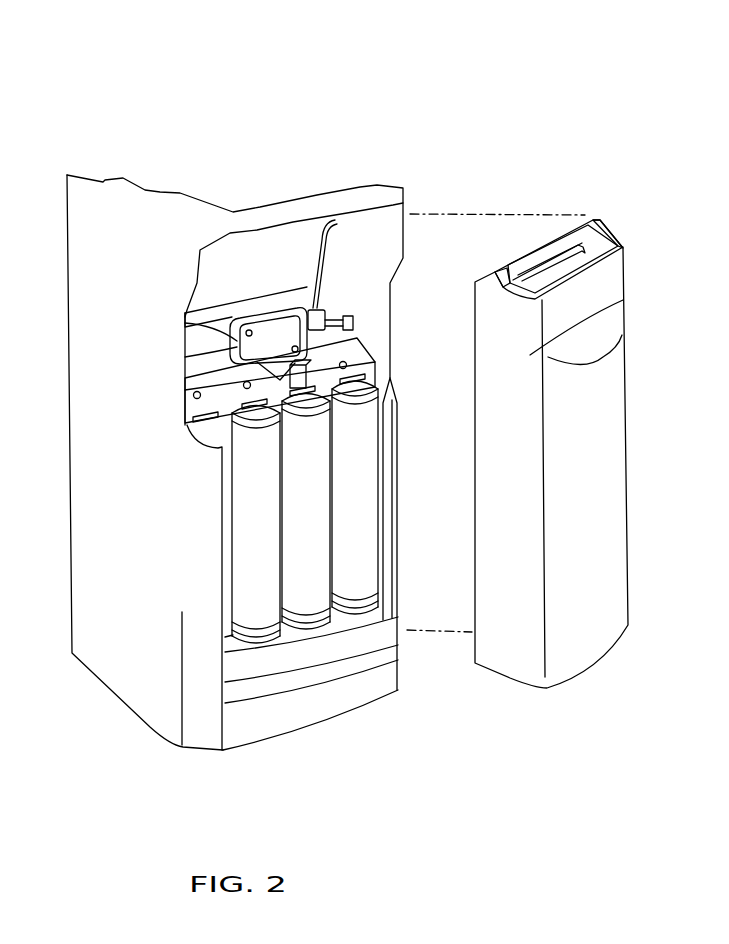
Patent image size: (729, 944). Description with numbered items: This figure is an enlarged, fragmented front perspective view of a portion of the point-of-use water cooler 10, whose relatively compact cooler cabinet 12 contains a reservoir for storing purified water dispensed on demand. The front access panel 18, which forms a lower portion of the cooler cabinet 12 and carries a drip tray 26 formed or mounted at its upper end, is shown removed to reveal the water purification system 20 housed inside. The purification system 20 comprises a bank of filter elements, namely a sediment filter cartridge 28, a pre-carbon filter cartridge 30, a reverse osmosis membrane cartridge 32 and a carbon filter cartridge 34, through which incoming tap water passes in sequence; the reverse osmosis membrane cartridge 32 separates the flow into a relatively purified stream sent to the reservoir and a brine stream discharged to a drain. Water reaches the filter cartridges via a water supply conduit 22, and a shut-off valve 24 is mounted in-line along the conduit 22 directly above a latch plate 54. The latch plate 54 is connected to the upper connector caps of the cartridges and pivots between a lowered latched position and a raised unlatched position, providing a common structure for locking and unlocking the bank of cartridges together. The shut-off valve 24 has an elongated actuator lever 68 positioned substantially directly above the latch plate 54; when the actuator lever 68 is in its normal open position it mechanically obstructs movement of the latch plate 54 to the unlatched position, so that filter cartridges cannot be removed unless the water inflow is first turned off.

The point-of-use water cooler 10 is at (430, 106).
The cooler cabinet 12 is at (120, 642).
The front access panel 18 is at (600, 498).
The water purification system 20 is at (323, 496).
The water supply conduit 22 is at (207, 343).
The shut-off valve 24 is at (272, 333).
The drip tray 26 is at (585, 266).
The sediment filter cartridge 28 is at (357, 587).
The pre-carbon filter cartridge 30 is at (307, 598).
The reverse osmosis membrane cartridge 32 is at (258, 612).
The carbon filter cartridge 34 is at (227, 590).
The latch plate 54 is at (207, 388).
The actuator lever 68 is at (357, 340).